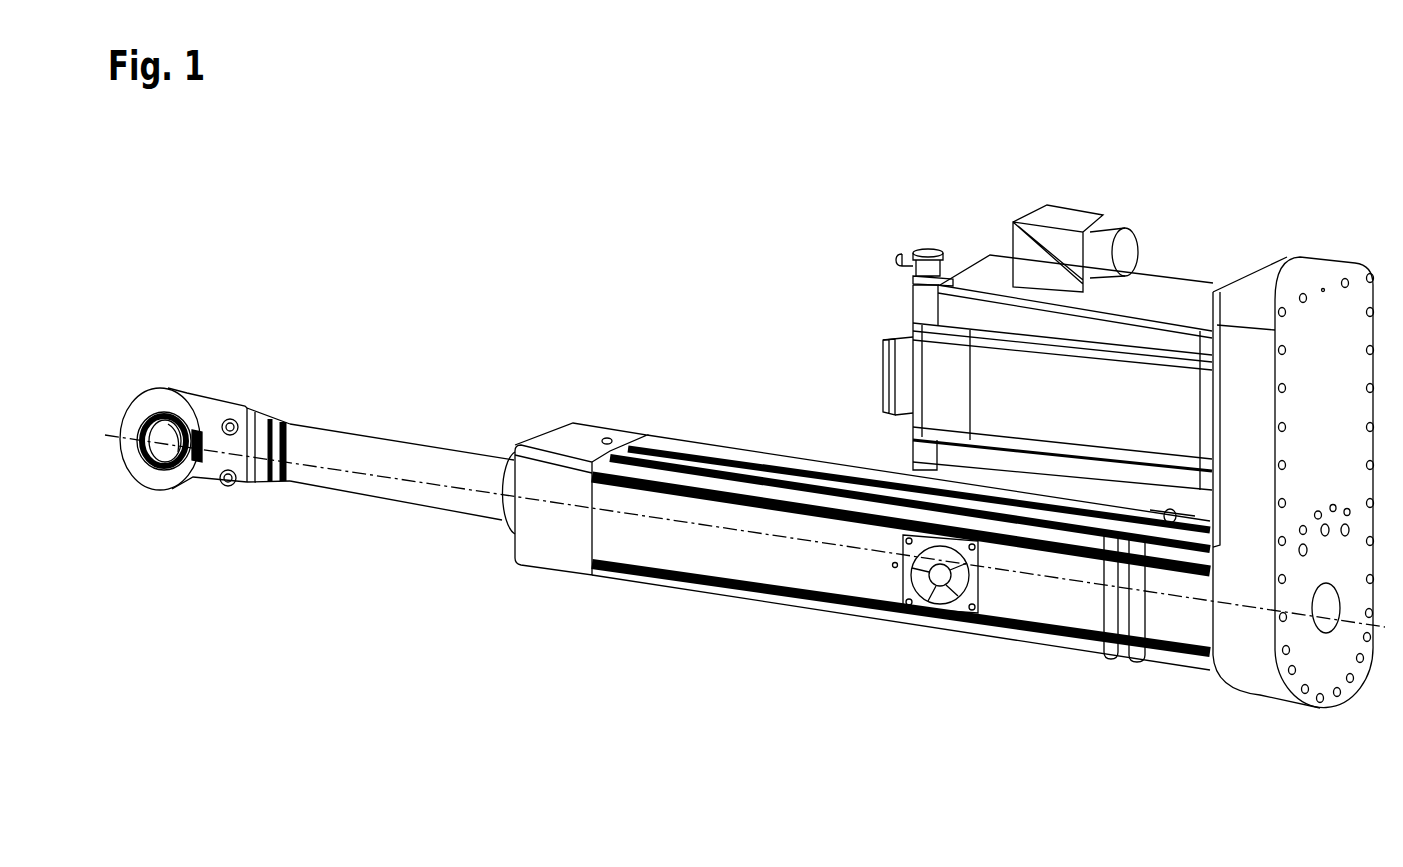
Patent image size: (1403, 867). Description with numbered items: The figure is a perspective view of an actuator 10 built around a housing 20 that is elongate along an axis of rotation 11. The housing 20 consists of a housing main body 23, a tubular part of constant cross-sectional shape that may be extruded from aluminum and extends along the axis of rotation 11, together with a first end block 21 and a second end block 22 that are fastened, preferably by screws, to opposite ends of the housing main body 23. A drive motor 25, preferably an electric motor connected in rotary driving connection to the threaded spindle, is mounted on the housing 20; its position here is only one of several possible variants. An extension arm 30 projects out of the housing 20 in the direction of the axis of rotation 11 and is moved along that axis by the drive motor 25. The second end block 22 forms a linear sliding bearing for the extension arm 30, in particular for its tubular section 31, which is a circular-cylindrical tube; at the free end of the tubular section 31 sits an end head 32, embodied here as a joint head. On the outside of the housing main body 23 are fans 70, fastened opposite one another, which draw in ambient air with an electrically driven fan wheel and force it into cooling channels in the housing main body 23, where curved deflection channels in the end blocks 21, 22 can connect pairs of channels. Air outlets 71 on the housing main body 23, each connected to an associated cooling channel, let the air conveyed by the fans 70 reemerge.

The actuator 10 is at (1286, 178).
The axis of rotation 11 is at (1385, 627).
The housing 20 is at (1048, 618).
The first end block 21 is at (1193, 633).
The second end block 22 is at (556, 546).
The housing main body 23 is at (901, 552).
The drive motor 25 is at (1183, 300).
The extension arm 30 is at (347, 483).
The tubular section 31 is at (402, 472).
The end head 32 is at (142, 413).
The fan 70 is at (910, 617).
The air outlet 71 is at (1113, 533).